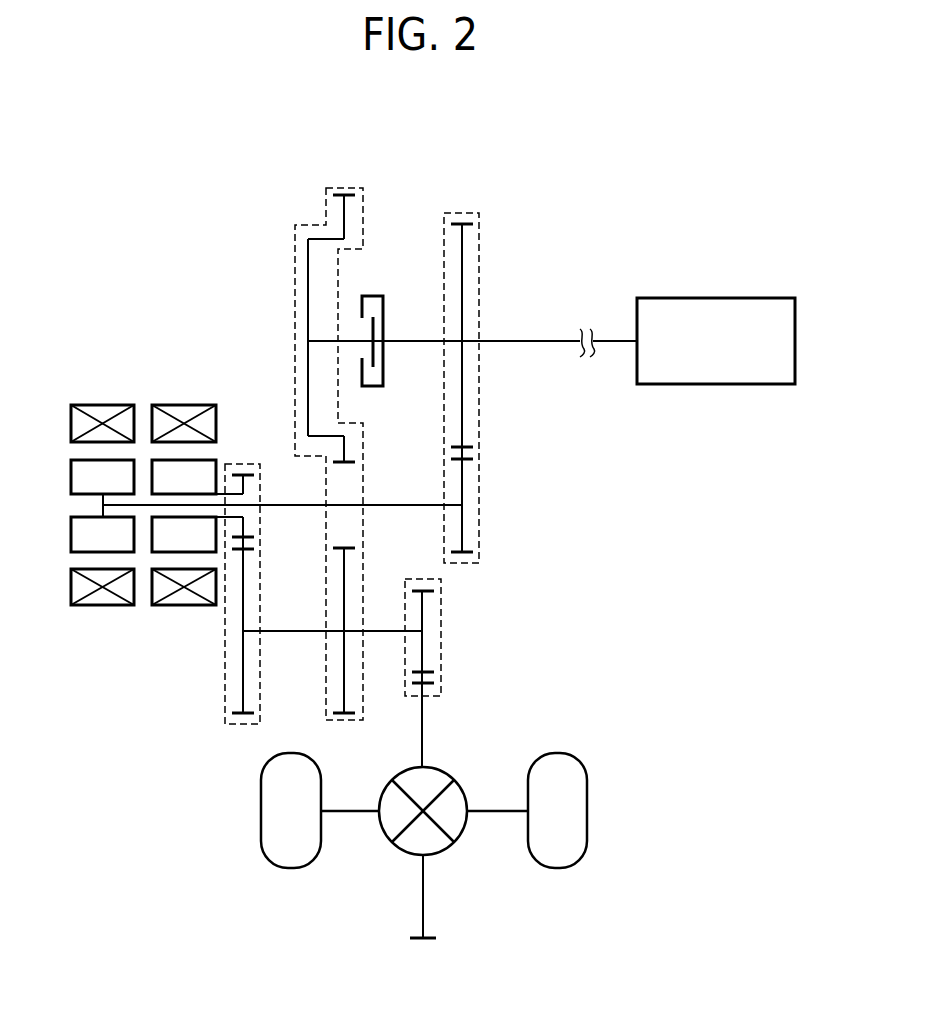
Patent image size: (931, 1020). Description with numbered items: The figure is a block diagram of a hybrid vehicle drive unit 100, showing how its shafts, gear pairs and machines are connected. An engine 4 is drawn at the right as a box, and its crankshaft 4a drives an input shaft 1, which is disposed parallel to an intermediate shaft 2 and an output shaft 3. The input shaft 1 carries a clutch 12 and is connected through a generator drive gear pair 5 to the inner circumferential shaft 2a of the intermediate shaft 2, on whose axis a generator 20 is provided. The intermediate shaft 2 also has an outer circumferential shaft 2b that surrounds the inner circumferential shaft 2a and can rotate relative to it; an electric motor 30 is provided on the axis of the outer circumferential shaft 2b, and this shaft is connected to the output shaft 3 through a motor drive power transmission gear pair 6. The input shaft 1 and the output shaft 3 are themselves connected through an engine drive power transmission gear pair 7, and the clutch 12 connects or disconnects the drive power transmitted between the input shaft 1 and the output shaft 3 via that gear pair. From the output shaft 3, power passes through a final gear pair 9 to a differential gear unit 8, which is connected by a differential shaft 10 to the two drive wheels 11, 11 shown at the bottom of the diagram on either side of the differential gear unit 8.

The hybrid vehicle drive unit 100 is at (589, 137).
The input shaft 1 is at (534, 340).
The engine 4 is at (720, 298).
The crankshaft 4a is at (612, 344).
The engine drive power transmission gear pair 7 is at (295, 258).
The clutch 12 is at (395, 315).
The generator drive gear pair 5 is at (479, 480).
The intermediate shaft 2 is at (397, 505).
The inner circumferential shaft 2a is at (294, 507).
The outer circumferential shaft 2b is at (236, 494).
The motor drive power transmission gear pair 6 is at (225, 672).
The output shaft 3 is at (383, 630).
The final gear pair 9 is at (441, 616).
The differential gear unit 8 is at (445, 851).
The differential shaft 10 is at (494, 810).
The drive wheels 11 is at (261, 810).
The generator 20 is at (86, 403).
The electric motor 30 is at (172, 403).